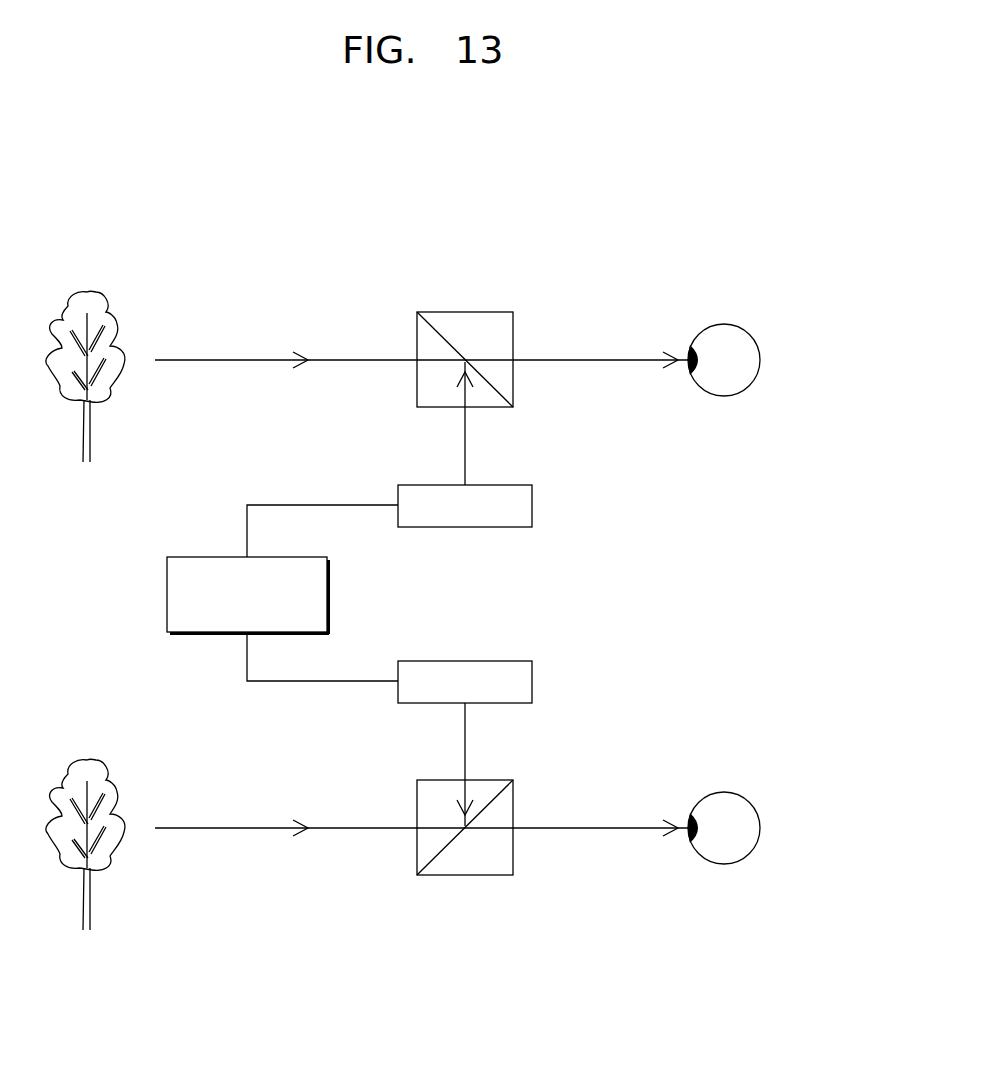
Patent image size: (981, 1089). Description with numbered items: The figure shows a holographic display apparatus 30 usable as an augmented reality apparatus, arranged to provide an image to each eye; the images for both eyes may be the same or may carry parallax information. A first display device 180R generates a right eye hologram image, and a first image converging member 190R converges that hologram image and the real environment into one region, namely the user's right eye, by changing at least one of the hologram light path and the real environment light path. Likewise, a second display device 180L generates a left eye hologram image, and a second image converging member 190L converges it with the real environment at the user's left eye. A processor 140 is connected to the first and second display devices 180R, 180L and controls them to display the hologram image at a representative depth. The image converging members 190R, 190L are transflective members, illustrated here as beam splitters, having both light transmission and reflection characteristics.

The holographic display apparatus 30 is at (592, 226).
The processor 140 is at (330, 597).
The first display device 180R is at (532, 507).
The second display device 180L is at (532, 681).
The first image converging member 190R is at (465, 312).
The second image converging member 190L is at (465, 875).